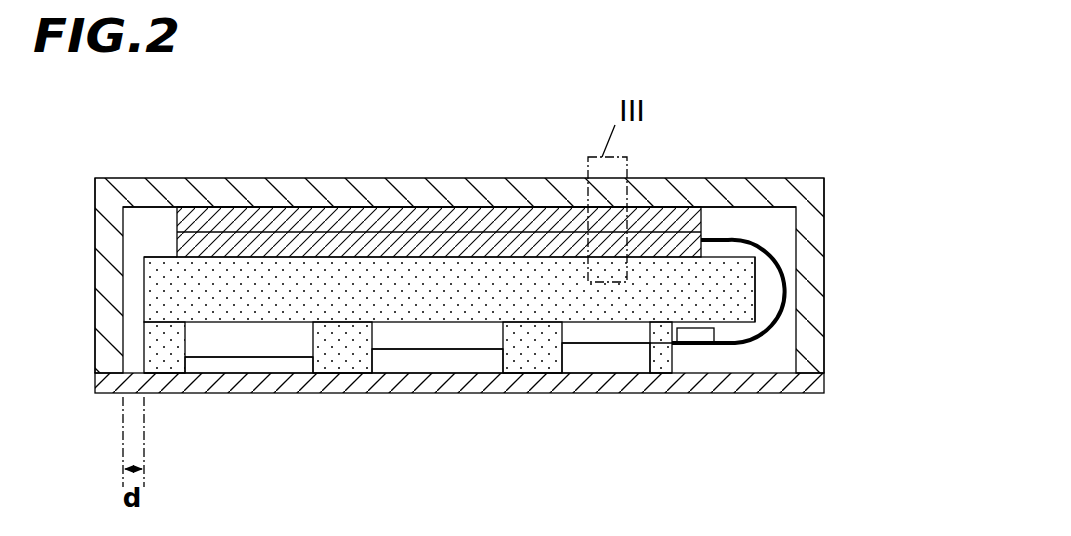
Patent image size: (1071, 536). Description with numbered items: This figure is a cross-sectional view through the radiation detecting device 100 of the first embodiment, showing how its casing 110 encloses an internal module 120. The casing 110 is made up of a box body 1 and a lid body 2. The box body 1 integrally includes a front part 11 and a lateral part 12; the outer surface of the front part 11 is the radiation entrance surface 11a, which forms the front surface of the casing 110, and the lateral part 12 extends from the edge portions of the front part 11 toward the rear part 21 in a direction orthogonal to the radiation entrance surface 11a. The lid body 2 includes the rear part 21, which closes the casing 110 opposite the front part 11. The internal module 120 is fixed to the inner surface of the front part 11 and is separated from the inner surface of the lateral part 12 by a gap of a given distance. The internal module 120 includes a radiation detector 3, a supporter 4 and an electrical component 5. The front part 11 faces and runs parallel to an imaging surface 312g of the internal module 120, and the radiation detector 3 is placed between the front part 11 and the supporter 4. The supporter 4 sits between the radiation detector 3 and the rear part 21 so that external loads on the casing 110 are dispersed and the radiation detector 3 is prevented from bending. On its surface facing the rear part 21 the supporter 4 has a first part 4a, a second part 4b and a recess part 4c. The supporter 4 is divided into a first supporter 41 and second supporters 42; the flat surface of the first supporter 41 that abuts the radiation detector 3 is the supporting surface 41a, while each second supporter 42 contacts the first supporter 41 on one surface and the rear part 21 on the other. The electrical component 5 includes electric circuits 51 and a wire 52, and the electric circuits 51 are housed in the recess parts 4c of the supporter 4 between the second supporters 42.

The detecting device 100 is at (442, 137).
The casing 110 is at (62, 202).
The box body 1 is at (471, 289).
The front part 11 is at (223, 175).
The radiation entrance surface 11a is at (354, 200).
The lateral part 12 is at (117, 357).
The lid body 2 is at (441, 407).
The rear part 21 is at (467, 387).
The internal module 120 is at (865, 163).
The radiation detector 3 is at (703, 225).
The imaging surface 312g is at (666, 207).
The supporter 4 is at (494, 298).
The first supporter 41 is at (730, 322).
The supporting surface 41a is at (160, 255).
The first part 4a is at (760, 325).
The second supporter 42 is at (173, 360).
The second part 4b is at (168, 380).
The recess part 4c is at (230, 325).
The electrical component 5 is at (528, 340).
The electric circuits 51 is at (248, 357).
The wire 52 is at (767, 328).